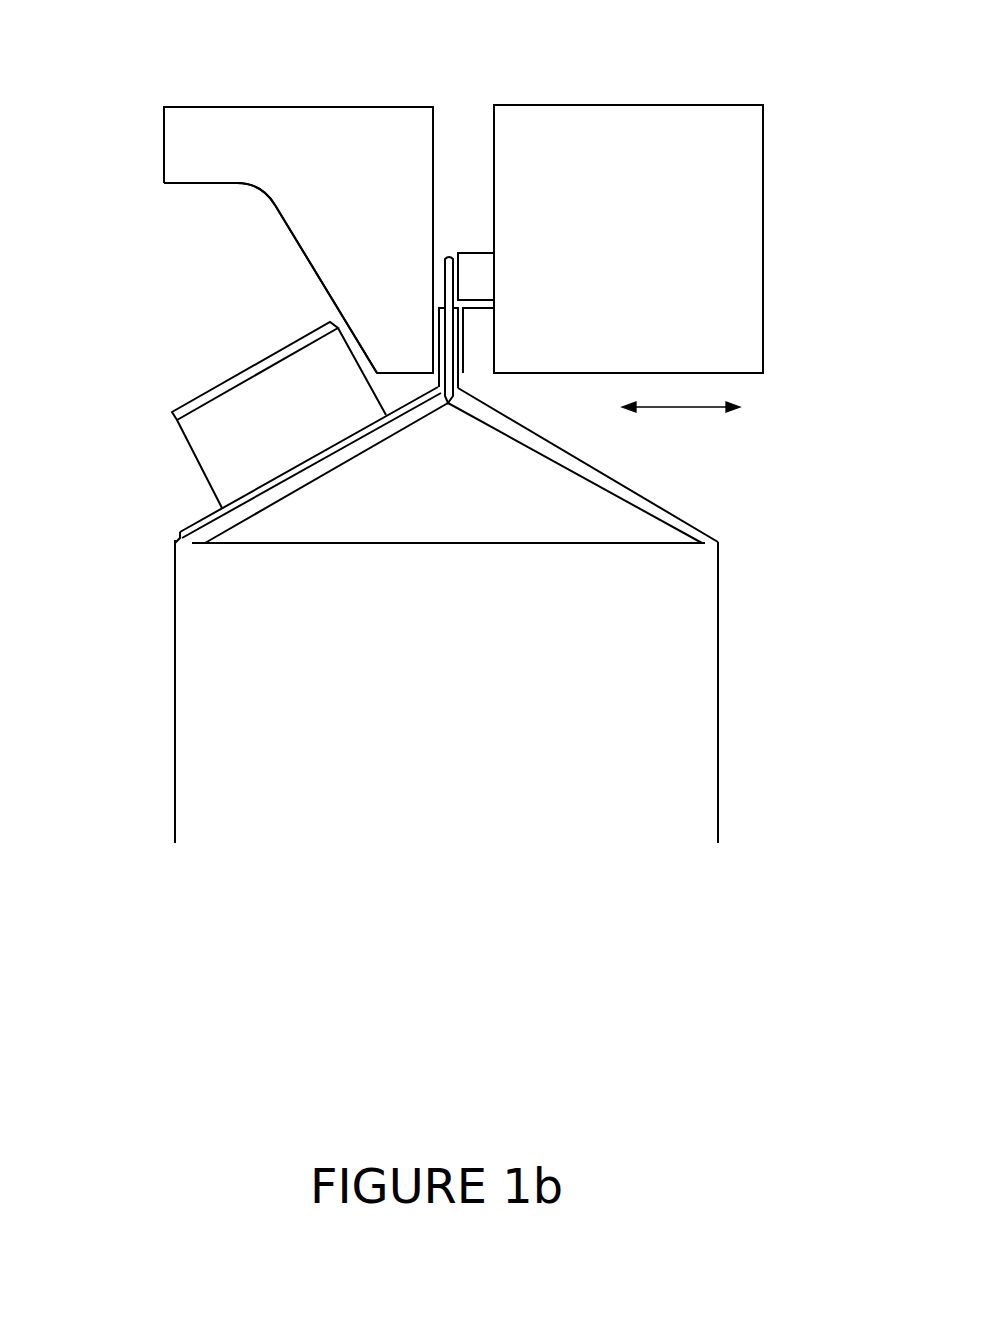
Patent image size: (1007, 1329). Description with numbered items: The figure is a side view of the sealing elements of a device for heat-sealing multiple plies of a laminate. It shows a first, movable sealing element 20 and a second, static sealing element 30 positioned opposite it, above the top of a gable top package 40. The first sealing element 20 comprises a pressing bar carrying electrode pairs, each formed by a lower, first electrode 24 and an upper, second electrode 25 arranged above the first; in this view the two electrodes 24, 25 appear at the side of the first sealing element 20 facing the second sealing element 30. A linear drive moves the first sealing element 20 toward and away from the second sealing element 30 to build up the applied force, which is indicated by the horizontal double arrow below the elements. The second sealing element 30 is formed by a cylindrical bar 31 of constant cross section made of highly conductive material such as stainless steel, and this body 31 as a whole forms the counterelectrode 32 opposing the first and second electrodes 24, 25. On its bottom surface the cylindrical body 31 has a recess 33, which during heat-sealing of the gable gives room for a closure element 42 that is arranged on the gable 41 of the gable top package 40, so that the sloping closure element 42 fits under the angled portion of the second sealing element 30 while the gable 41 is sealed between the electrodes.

The first sealing element 20 is at (631, 77).
The first electrode 24 is at (482, 352).
The second electrode 25 is at (488, 272).
The second sealing element 30 is at (262, 86).
The cylindrical bar 31 is at (193, 153).
The counterelectrode 32 is at (432, 190).
The recess 33 is at (270, 200).
The gable top package 40 is at (482, 637).
The gable 41 is at (581, 503).
The closure element 42 is at (213, 440).